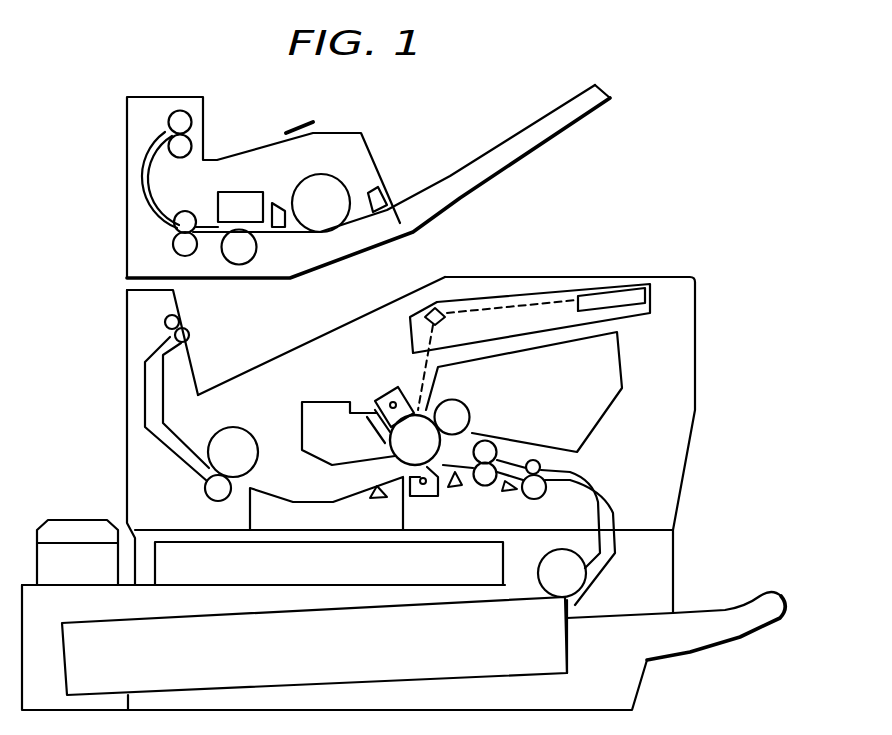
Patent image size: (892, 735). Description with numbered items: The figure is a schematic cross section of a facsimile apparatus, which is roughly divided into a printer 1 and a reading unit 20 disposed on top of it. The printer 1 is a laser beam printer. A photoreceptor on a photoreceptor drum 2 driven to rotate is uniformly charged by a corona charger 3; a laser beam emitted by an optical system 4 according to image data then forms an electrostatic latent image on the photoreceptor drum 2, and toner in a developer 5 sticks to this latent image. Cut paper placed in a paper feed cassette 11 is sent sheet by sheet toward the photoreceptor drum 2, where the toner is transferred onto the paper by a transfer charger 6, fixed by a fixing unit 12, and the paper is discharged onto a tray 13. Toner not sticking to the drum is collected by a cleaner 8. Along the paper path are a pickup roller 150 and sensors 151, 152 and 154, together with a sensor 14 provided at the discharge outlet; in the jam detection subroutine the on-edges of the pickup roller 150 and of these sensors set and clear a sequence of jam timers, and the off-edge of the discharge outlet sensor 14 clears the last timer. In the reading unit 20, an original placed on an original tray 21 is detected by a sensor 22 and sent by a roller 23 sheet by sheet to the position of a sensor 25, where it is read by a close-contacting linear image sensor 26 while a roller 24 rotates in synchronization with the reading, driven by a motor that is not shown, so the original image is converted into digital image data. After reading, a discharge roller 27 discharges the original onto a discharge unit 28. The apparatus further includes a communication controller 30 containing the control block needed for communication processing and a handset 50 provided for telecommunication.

The printer 1 is at (98, 411).
The photoreceptor drum 2 is at (396, 469).
The corona charger 3 is at (390, 388).
The optical system 4 is at (517, 291).
The developer 5 is at (621, 360).
The transfer charger 6 is at (423, 498).
The cleaner 8 is at (325, 400).
The paper feed cassette 11 is at (292, 662).
The fixing unit 12 is at (247, 428).
The tray 13 is at (305, 343).
The sensor 14 is at (157, 339).
The reading unit 20 is at (98, 235).
The original tray 21 is at (532, 122).
The sensor 22 is at (383, 188).
The roller 23 is at (322, 174).
The roller 24 is at (238, 265).
The sensor 25 is at (277, 203).
The linear image sensor 26 is at (217, 205).
The discharge roller 27 is at (178, 111).
The discharge unit 28 is at (290, 130).
The communication controller 30 is at (287, 576).
The handset 50 is at (68, 519).
The pickup roller 150 is at (556, 599).
The sensor 151 is at (508, 493).
The sensor 152 is at (455, 488).
The sensor 154 is at (376, 500).